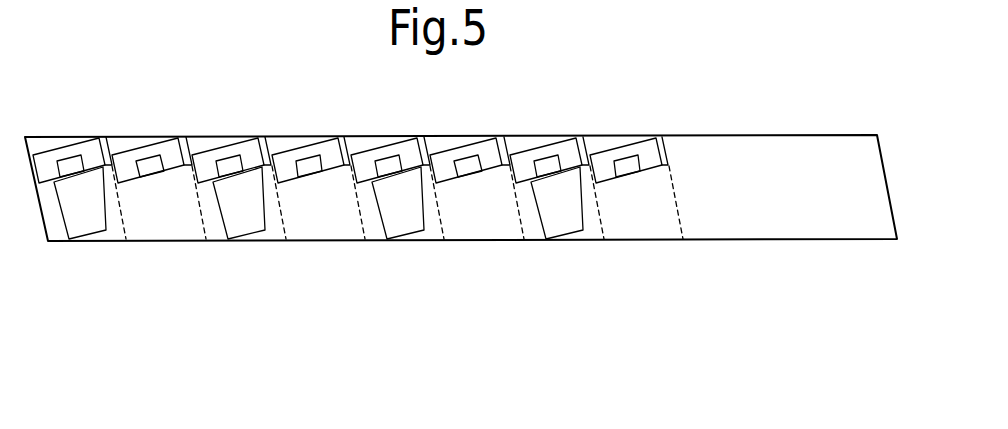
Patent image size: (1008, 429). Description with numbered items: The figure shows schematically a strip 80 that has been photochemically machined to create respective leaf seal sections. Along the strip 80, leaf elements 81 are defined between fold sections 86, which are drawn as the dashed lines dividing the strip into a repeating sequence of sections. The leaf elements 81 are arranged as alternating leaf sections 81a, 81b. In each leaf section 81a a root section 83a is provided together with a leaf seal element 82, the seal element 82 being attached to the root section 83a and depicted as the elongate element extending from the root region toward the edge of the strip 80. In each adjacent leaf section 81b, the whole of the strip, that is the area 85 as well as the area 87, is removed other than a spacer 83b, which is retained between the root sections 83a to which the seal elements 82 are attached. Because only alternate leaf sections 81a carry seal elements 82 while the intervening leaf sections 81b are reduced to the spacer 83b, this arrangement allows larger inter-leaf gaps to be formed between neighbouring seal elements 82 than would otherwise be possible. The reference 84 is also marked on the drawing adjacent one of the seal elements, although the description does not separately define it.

The strip 80 is at (850, 135).
The leaf elements 81 is at (276, 215).
The leaf section 81a is at (417, 147).
The leaf section 81b is at (650, 150).
The leaf seal element 82 is at (80, 212).
The root section 83a is at (97, 152).
The spacer 83b is at (337, 148).
The blocking element edge 84 is at (217, 220).
The area 85 is at (213, 143).
The fold sections 86 is at (437, 240).
The area 87 is at (480, 220).